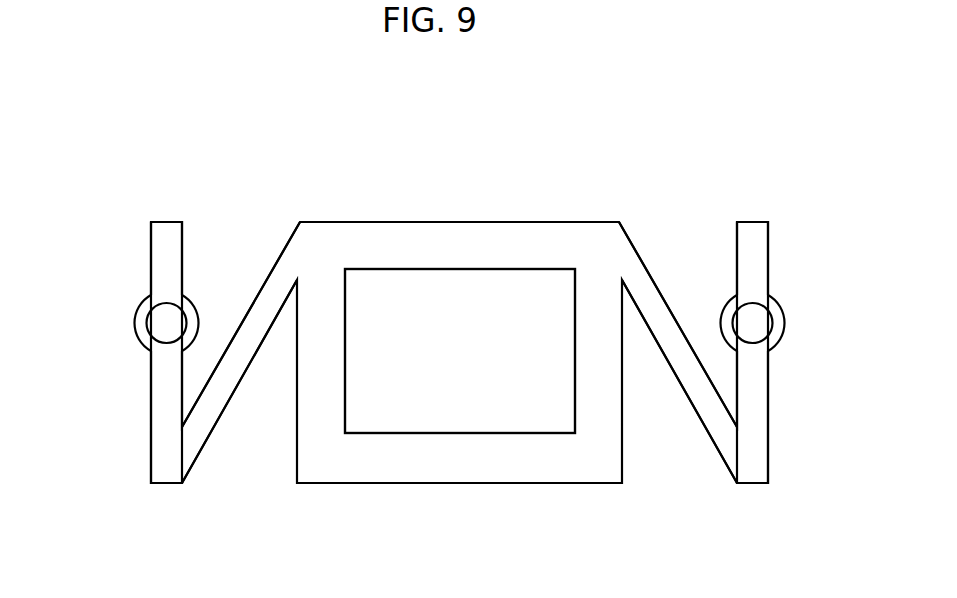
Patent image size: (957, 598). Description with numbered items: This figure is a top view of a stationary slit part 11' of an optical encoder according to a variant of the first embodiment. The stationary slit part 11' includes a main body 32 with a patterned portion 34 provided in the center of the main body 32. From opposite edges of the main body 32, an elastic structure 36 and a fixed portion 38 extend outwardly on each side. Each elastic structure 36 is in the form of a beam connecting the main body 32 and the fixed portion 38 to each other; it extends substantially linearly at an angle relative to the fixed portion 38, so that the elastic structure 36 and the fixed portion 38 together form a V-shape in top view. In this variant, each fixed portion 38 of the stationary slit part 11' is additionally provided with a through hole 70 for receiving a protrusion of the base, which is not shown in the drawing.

The stationary slit part 11' is at (459, 268).
The main body 32 is at (492, 221).
The patterned portion 34 is at (477, 434).
The elastic structure 36 is at (256, 296).
The fixed portion 38 is at (150, 257).
The through hole 70 is at (135, 320).